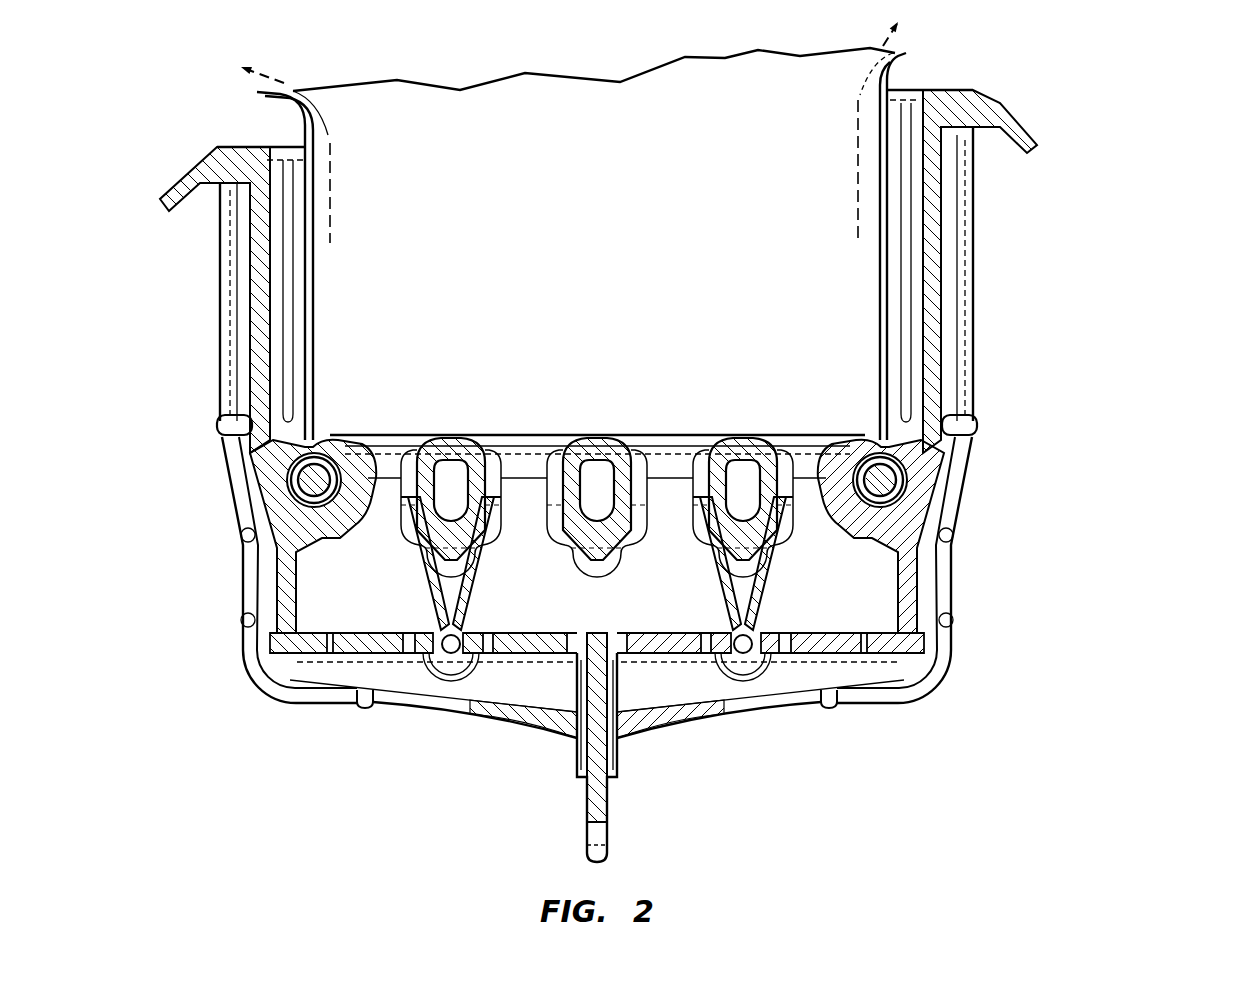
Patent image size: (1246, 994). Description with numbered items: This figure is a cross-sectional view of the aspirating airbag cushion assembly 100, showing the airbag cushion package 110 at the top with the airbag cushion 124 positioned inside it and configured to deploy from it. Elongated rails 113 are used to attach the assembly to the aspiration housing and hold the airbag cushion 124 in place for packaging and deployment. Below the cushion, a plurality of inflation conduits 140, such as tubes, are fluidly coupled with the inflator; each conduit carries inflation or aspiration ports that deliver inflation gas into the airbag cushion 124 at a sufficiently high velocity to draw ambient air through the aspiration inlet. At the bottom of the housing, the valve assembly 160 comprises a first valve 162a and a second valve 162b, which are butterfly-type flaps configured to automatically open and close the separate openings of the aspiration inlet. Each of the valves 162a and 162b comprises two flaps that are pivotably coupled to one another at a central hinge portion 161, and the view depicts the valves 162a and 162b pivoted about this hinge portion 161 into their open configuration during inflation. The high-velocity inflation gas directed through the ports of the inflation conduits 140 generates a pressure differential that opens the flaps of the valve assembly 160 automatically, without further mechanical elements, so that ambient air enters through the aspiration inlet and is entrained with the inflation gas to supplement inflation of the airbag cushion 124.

The aspirating airbag cushion assembly 100 is at (1072, 291).
The airbag cushion package 110 is at (305, 238).
The elongated rails 113 is at (312, 476).
The airbag cushion 124 is at (545, 103).
The inflation conduits 140 is at (455, 486).
The valve assembly 160 is at (404, 568).
The hinge portion 161 is at (450, 648).
The first valve 162a is at (425, 583).
The second valve 162b is at (478, 590).